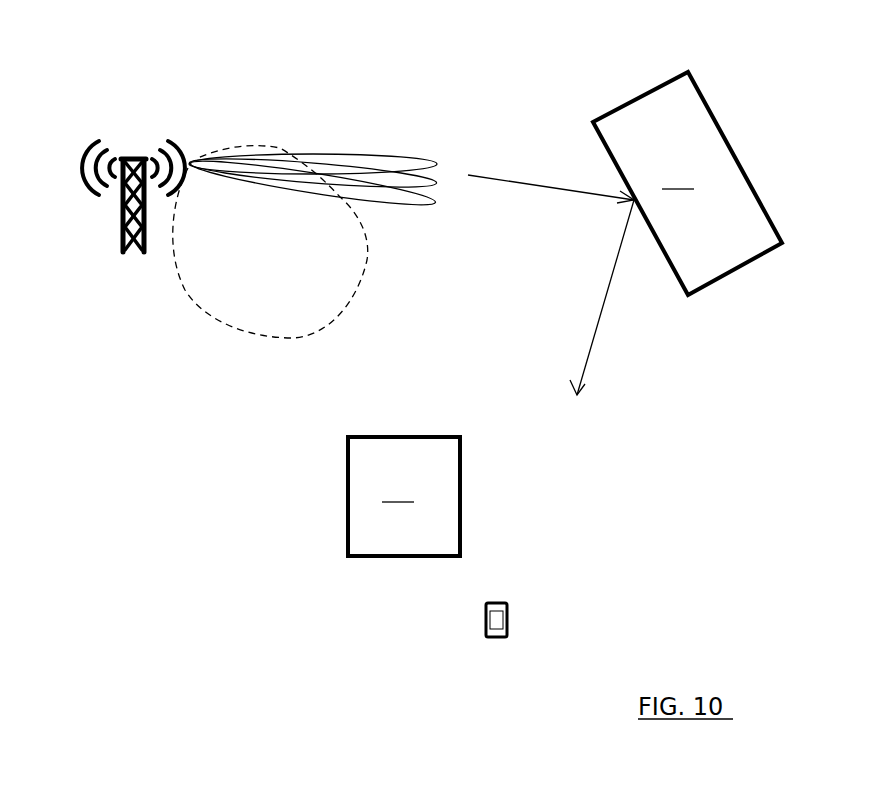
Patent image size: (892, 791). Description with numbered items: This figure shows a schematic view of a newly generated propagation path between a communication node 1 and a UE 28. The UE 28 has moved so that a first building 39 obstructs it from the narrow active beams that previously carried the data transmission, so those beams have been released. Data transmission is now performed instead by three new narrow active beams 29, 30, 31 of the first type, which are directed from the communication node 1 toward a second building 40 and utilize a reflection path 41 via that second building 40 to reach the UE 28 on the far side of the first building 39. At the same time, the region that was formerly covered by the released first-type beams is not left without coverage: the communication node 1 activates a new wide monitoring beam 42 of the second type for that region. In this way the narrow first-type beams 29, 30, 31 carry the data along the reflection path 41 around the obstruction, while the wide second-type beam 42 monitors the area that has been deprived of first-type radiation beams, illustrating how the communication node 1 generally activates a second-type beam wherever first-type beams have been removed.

The communication node 1 is at (137, 127).
The UE 28 is at (496, 618).
The new narrow active beam 29 is at (411, 208).
The new narrow active beam 30 is at (437, 186).
The new narrow active beam 31 is at (413, 153).
The first building 39 is at (404, 496).
The second building 40 is at (687, 183).
The reflection path 41 is at (600, 312).
The new wide monitoring beam 42 is at (373, 263).